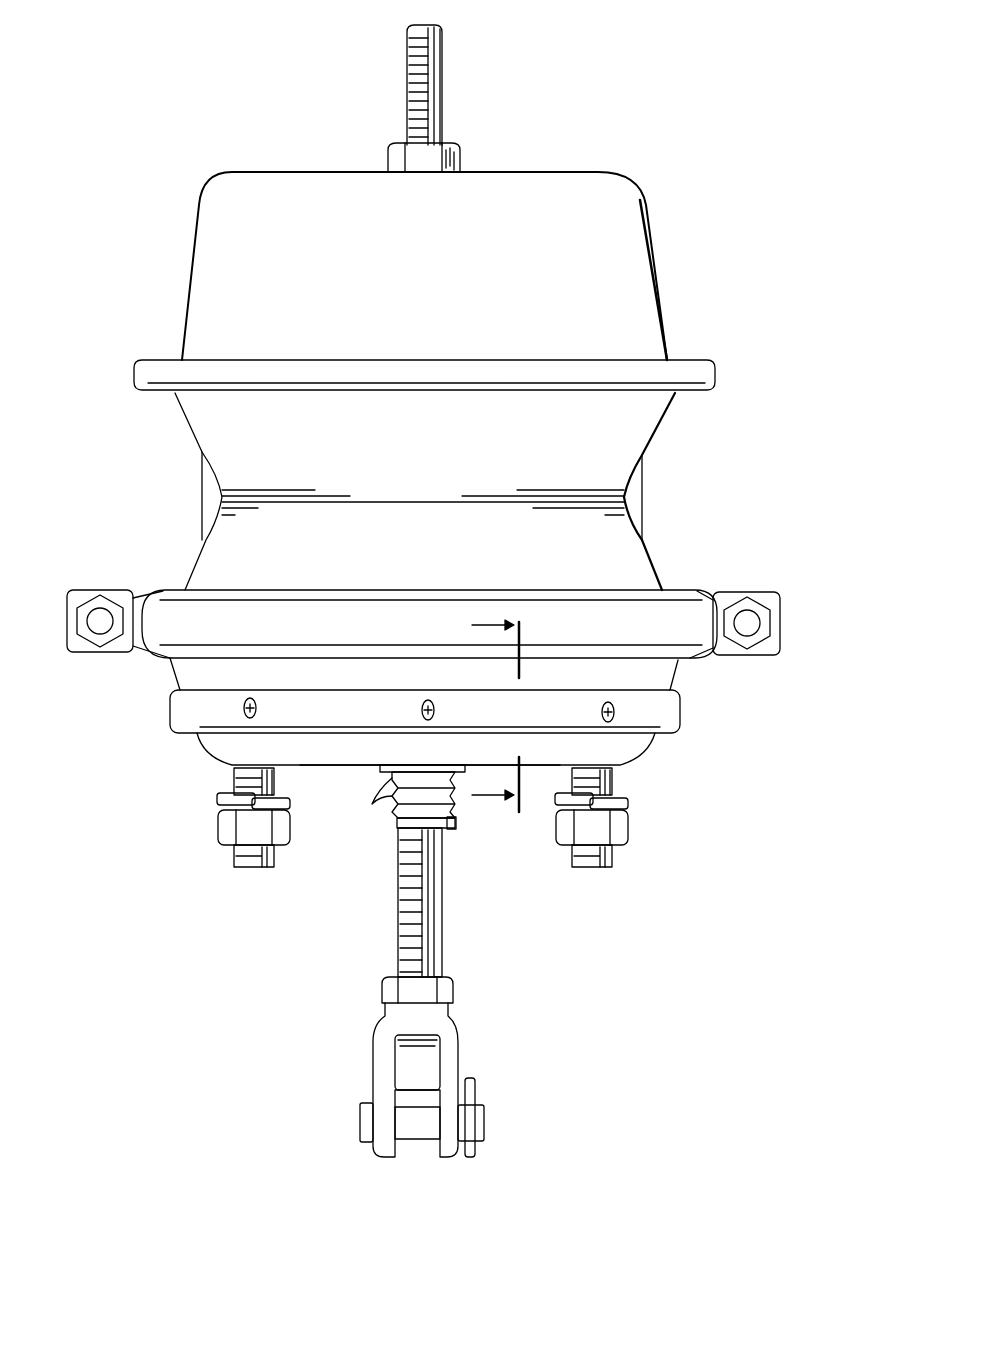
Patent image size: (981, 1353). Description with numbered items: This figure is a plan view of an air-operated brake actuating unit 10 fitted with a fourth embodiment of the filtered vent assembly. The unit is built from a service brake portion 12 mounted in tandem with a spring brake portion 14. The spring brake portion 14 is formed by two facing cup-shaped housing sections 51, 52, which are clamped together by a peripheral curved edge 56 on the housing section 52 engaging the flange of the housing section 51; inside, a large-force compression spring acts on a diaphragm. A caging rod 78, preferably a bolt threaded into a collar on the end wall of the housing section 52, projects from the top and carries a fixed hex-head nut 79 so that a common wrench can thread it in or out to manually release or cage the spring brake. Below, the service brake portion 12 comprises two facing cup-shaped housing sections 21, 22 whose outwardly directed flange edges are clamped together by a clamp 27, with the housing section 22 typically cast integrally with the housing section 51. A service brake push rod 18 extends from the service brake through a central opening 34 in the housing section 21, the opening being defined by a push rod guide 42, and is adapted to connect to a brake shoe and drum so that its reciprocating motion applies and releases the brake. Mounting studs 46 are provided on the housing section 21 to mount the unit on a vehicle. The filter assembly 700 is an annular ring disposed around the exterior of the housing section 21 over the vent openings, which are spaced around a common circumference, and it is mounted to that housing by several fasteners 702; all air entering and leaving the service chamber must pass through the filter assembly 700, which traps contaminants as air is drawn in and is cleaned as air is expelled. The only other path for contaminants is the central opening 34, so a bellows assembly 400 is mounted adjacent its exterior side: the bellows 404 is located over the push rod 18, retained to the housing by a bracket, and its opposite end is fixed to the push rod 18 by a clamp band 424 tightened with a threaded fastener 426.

The brake actuating unit 10 is at (104, 309).
The spring brake portion 14 is at (707, 330).
The caging rod 78 is at (440, 68).
The hex-head nut 79 is at (458, 153).
The housing section 52 is at (634, 236).
The peripheral curved edge 56 is at (708, 377).
The housing section 51 is at (620, 440).
The housing section 22 is at (638, 567).
The housing section 21 is at (675, 668).
The clamp 27 is at (88, 651).
The filter assembly 700 is at (683, 717).
The fasteners 702 is at (245, 715).
The service brake portion 12 is at (690, 862).
The central opening 34 is at (402, 764).
The push rod guide 42 is at (467, 765).
The bellows assembly 400 is at (458, 836).
The bellows 404 is at (398, 798).
The clamp band 424 is at (398, 824).
The threaded fastener 426 is at (456, 823).
The service brake push rod 18 is at (405, 912).
The mounting studs 46 is at (268, 862).